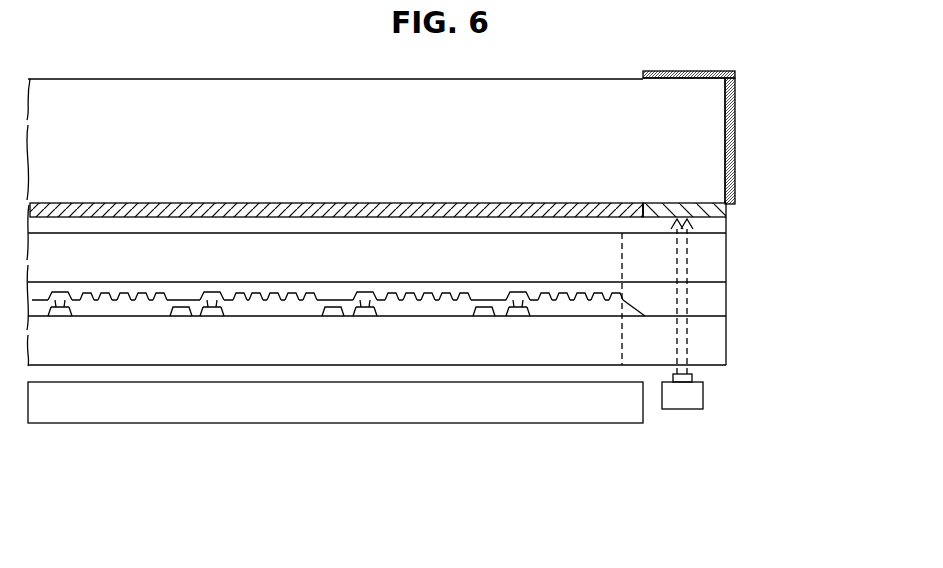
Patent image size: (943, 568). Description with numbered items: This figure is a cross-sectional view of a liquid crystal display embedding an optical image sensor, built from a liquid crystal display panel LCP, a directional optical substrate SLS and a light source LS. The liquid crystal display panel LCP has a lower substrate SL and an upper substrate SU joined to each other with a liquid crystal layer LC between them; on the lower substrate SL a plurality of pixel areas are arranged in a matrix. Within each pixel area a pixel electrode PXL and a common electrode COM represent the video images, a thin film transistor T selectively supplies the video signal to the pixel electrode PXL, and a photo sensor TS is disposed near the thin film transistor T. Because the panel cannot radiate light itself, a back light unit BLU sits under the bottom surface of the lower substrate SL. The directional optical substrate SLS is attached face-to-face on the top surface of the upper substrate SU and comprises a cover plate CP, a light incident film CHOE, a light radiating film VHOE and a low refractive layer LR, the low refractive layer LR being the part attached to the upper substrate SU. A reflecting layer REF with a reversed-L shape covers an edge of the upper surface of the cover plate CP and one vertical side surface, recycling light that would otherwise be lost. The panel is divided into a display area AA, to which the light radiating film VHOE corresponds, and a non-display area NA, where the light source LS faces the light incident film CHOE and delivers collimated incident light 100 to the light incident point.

The reflecting layer REF is at (735, 100).
The cover plate CP is at (715, 133).
The light radiating film VHOE is at (642, 201).
The light incident film CHOE is at (722, 209).
The low refractive layer LR is at (717, 225).
The upper substrate SU is at (717, 262).
The liquid crystal layer LC is at (717, 302).
The lower substrate SL is at (717, 335).
The incident light 100 is at (682, 356).
The light source LS is at (703, 393).
The back light unit BLU is at (640, 420).
The thin film transistor T is at (58, 316).
The photo sensor TS is at (181, 316).
The pixel electrode PXL is at (84, 300).
The common electrode COM is at (96, 302).
The directional optical substrate SLS is at (810, 127).
The liquid crystal display panel LCP is at (810, 255).
The display area AA is at (28, 526).
The non-display area NA is at (725, 518).